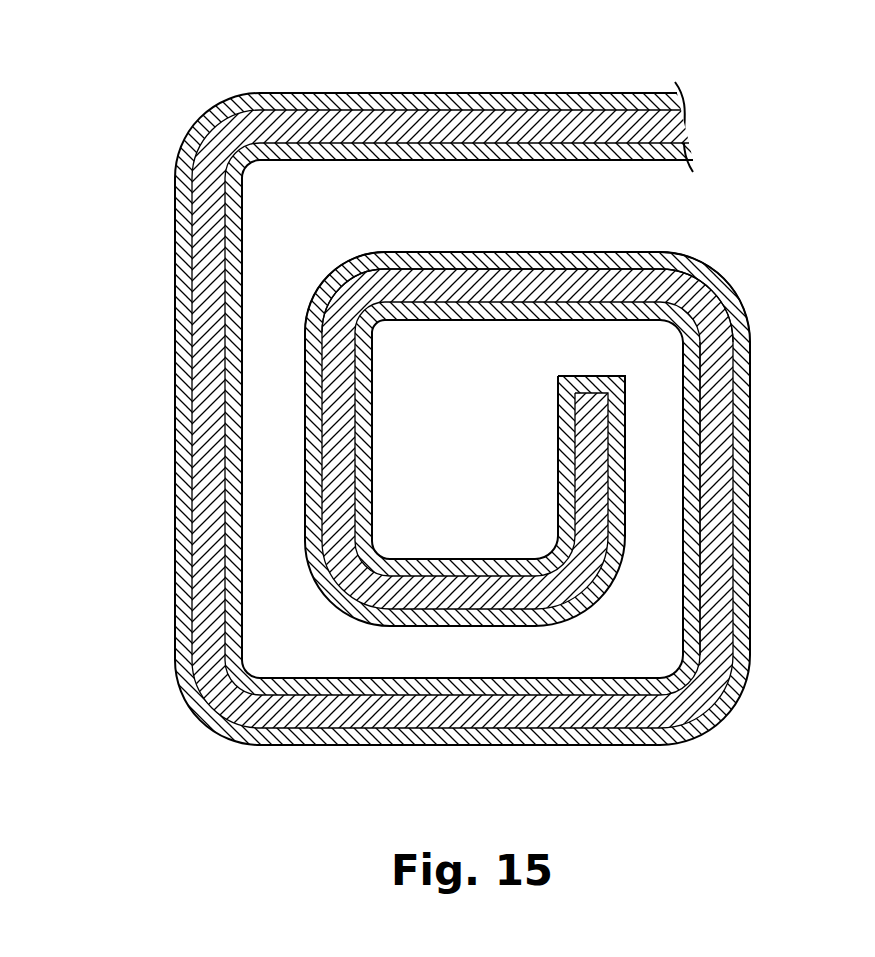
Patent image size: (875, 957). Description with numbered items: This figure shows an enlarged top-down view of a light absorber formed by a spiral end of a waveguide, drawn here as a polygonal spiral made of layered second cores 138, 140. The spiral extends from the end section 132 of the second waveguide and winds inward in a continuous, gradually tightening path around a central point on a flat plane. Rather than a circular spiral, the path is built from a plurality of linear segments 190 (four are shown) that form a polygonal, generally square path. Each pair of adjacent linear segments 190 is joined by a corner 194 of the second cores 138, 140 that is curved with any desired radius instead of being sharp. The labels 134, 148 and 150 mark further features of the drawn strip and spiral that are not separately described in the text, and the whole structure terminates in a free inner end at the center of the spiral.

The end section 132 is at (579, 124).
The outer layer of strip 134 is at (376, 745).
The second core 138 is at (738, 630).
The second core 140 is at (713, 593).
The coil winding 148 is at (730, 268).
The coil winding 150 is at (584, 262).
The linear segment 190 is at (340, 463).
The corner 194 is at (352, 302).